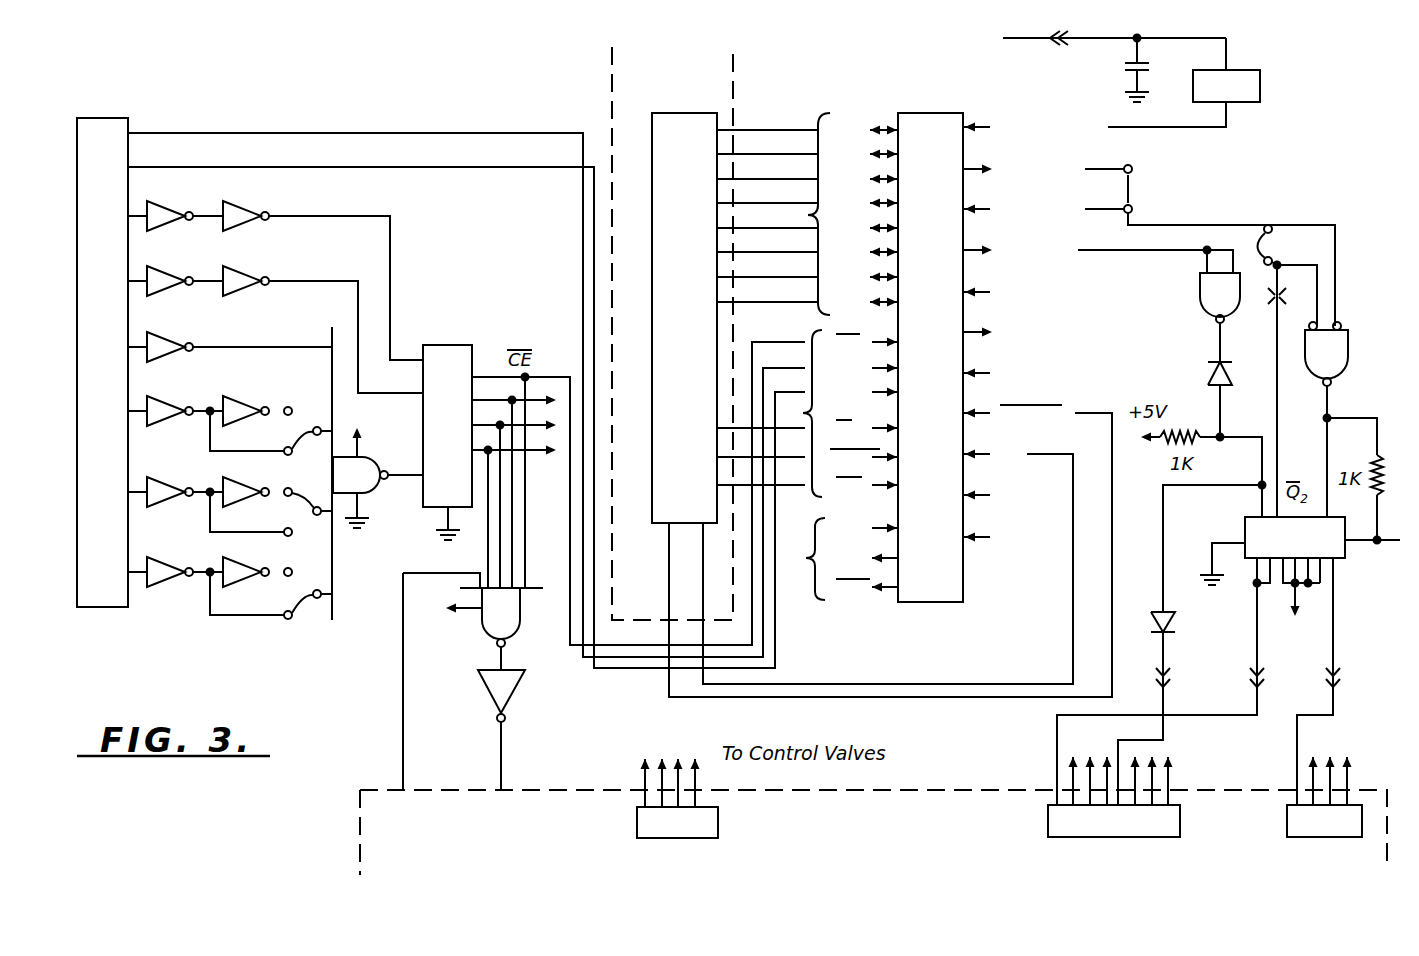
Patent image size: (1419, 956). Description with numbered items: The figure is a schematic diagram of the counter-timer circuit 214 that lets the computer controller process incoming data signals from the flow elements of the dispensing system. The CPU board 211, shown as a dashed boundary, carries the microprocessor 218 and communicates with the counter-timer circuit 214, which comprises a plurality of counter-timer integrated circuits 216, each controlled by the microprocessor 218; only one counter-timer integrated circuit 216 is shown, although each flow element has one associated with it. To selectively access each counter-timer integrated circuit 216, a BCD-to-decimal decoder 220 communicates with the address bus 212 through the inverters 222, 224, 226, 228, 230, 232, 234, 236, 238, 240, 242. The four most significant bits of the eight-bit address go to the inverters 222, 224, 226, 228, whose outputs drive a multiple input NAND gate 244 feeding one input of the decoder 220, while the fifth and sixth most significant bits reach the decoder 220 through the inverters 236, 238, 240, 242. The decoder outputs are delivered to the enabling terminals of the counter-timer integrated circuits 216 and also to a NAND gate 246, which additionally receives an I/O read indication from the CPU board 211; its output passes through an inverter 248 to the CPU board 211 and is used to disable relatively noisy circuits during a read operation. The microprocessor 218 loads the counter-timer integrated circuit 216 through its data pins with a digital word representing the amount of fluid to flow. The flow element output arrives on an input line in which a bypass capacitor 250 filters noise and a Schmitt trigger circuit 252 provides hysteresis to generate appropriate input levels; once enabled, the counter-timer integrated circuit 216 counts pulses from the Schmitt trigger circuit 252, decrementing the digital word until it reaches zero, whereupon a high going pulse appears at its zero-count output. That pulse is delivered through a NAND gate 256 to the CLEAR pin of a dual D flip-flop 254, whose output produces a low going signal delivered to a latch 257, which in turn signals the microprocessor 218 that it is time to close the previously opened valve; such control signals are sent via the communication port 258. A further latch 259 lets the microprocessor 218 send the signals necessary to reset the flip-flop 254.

The CPU board 211 is at (612, 93).
The address bus 212 is at (103, 603).
The counter-timer circuit 214 is at (1316, 96).
The counter-timer integrated circuit 216 is at (952, 477).
The microprocessor 218 is at (702, 390).
The BCD-to-decimal decoder 220 is at (448, 354).
The inverter 222 is at (170, 348).
The inverter 224 is at (170, 412).
The inverter 226 is at (168, 493).
The inverter 228 is at (168, 573).
The inverter 230 is at (241, 412).
The inverter 232 is at (241, 493).
The inverter 234 is at (241, 573).
The inverter 236 is at (168, 217).
The inverter 238 is at (168, 282).
The inverter 240 is at (241, 217).
The inverter 242 is at (241, 282).
The multiple input NAND gate 244 is at (376, 492).
The NAND gate 246 is at (510, 630).
The inverter 248 is at (510, 702).
The bypass capacitor 250 is at (1124, 64).
The Schmitt trigger circuit 252 is at (1245, 102).
The dual D flip-flop 254 is at (1316, 550).
The NAND gate 256 is at (1336, 366).
The latch 257 is at (1297, 828).
The communication port 258 is at (716, 832).
The latch 259 is at (1060, 826).